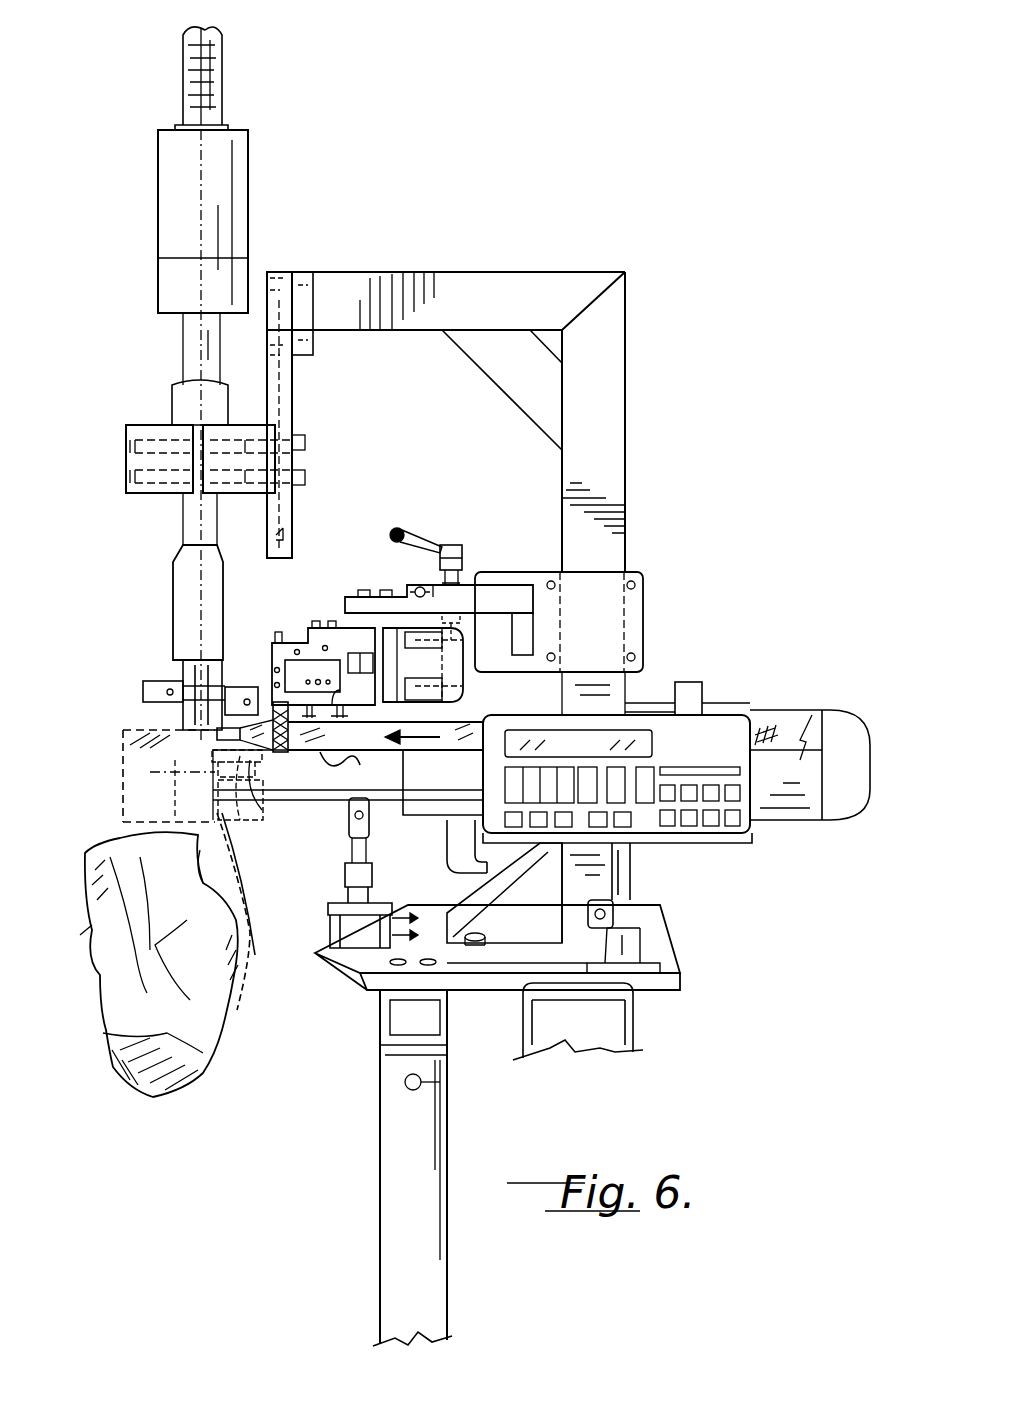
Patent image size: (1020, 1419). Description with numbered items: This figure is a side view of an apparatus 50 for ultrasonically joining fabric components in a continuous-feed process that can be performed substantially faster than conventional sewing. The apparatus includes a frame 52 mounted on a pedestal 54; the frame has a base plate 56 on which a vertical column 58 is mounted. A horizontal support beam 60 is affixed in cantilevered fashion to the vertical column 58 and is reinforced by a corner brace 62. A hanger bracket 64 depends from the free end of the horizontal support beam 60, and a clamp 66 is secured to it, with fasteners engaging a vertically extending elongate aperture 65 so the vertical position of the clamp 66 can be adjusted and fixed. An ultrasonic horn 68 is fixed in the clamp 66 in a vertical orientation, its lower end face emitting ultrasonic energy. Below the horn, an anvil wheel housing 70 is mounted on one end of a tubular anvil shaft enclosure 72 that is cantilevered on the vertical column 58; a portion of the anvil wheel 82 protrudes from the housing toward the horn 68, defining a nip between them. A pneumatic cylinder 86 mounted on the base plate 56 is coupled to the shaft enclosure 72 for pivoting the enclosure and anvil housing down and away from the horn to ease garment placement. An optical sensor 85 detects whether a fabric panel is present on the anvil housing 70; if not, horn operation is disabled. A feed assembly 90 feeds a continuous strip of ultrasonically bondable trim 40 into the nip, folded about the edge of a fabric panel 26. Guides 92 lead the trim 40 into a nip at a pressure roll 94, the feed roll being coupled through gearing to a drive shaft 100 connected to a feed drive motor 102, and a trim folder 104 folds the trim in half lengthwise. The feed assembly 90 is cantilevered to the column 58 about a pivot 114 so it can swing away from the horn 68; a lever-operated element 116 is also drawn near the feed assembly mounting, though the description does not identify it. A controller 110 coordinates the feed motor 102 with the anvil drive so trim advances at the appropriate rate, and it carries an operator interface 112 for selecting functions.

The apparatus 50 is at (366, 194).
The horizontal support beam 60 is at (472, 275).
The frame 52 is at (632, 329).
The corner brace 62 is at (520, 395).
The vertical column 58 is at (605, 485).
The hanger bracket 64 is at (283, 402).
The vertically extending elongate aperture 65 is at (282, 530).
The clamp 66 is at (143, 425).
The ultrasonic horn 68 is at (190, 665).
The optical sensor 85 is at (150, 680).
The trim 40 is at (215, 733).
The feed assembly 90 is at (300, 645).
The drive shaft 100 is at (345, 650).
The feed drive motor 102 is at (425, 655).
The pivot 114 is at (500, 585).
The control valve 116 is at (447, 548).
The anvil wheel 82 is at (140, 750).
The anvil wheel housing 70 is at (140, 795).
The fabric panel 26 is at (228, 1041).
The guides 92 is at (340, 752).
The pressure roll 94 is at (282, 760).
The trim folder 104 is at (230, 750).
The tubular anvil shaft enclosure 72 is at (398, 800).
The pneumatic cylinder 86 is at (328, 915).
The controller 110 is at (740, 718).
The operator interface 112 is at (650, 815).
The base plate 56 is at (493, 987).
The pedestal 54 is at (395, 1165).